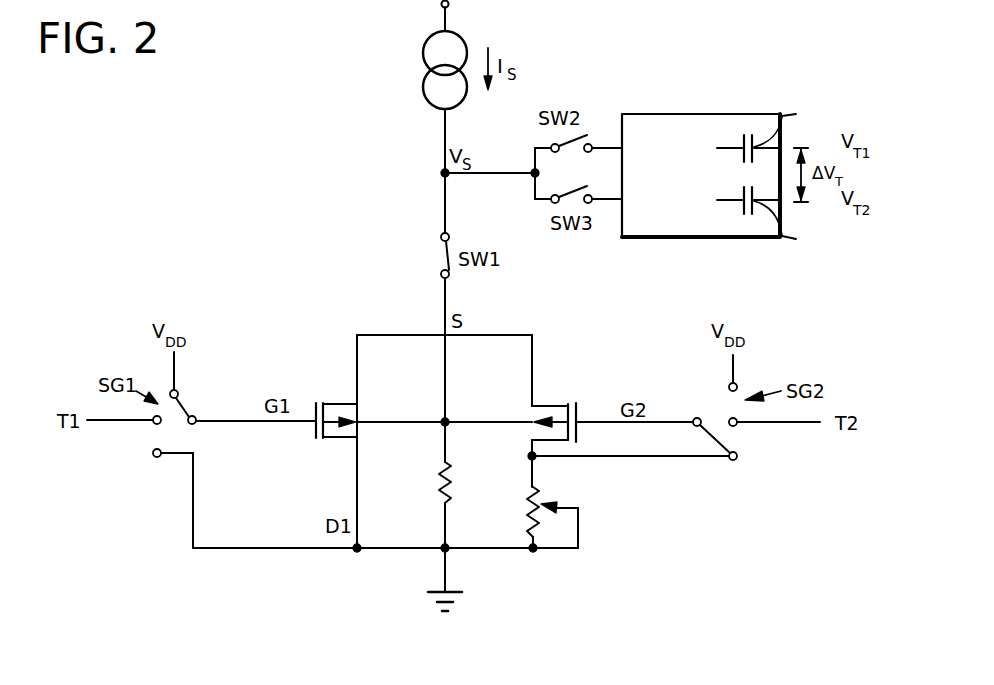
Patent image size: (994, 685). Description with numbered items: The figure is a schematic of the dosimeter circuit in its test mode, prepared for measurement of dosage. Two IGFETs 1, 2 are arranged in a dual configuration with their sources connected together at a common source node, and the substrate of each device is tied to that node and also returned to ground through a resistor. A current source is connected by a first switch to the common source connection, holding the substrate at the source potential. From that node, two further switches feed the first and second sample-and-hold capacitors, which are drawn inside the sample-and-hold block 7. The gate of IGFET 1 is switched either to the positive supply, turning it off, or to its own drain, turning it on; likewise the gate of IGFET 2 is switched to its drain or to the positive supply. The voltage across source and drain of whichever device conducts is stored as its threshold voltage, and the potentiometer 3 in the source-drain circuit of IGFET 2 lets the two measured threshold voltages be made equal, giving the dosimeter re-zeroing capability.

The IGFET 1 is at (314, 407).
The IGFET 2 is at (577, 410).
The potentiometer 3 is at (541, 501).
The sample and hold circuit 7 is at (683, 238).